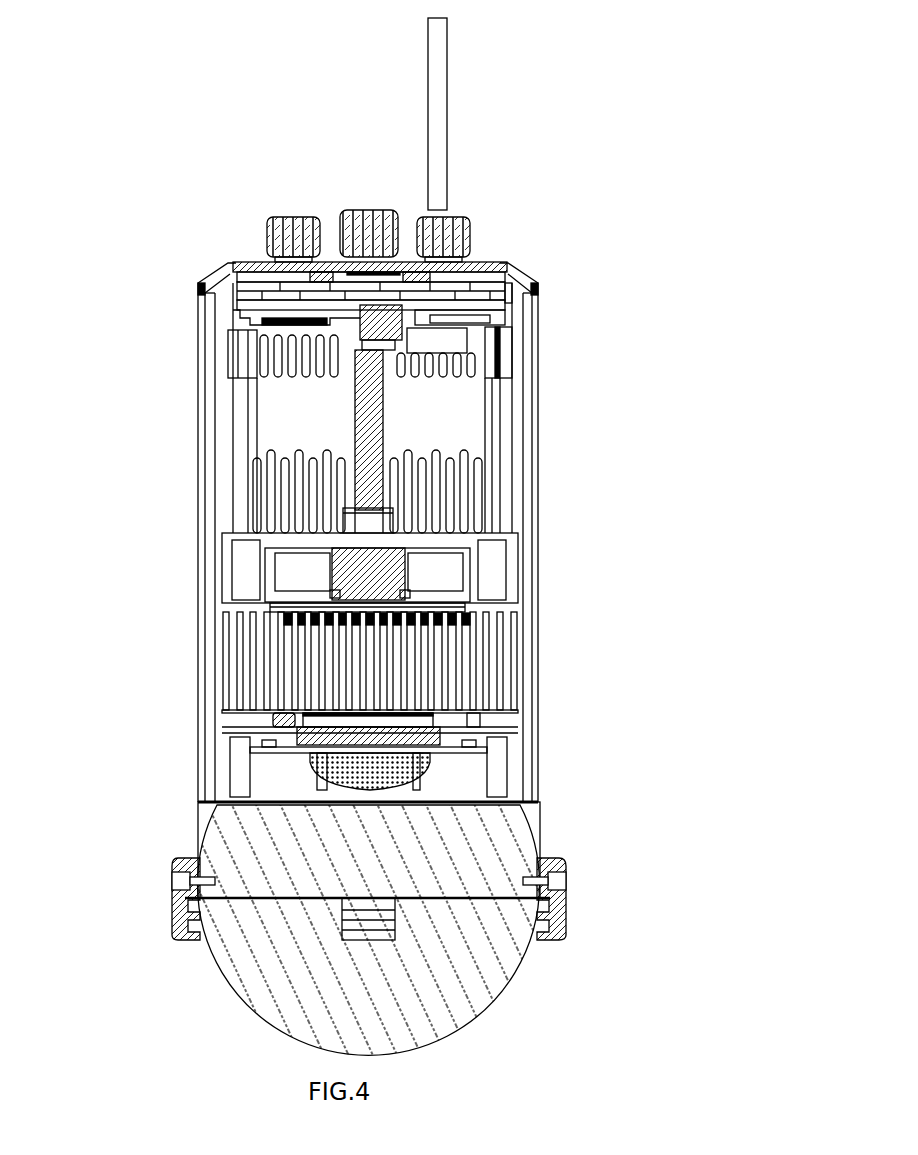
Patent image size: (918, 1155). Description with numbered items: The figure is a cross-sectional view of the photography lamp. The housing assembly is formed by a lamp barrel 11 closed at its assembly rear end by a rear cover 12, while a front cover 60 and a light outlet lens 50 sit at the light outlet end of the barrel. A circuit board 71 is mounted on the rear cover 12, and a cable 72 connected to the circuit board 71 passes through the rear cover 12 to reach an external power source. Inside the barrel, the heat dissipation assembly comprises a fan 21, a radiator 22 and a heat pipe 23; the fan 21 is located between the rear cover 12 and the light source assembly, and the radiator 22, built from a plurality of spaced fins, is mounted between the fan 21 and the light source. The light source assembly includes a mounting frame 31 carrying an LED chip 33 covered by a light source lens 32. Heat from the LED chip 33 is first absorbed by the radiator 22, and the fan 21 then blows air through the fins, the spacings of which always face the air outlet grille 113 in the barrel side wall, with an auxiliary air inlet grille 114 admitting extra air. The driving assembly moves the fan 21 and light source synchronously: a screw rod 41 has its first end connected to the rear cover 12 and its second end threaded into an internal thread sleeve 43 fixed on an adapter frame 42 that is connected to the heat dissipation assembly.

The lamp barrel 11 is at (202, 430).
The rear cover 12 is at (243, 263).
The fan 21 is at (232, 577).
The radiator 22 is at (272, 665).
The heat pipe 23 is at (285, 722).
The mounting frame 31 is at (480, 752).
The light source lens 32 is at (435, 775).
The LED chip 33 is at (488, 734).
The screw rod 41 is at (377, 413).
The adapter frame 42 is at (500, 575).
The internal thread sleeve 43 is at (390, 520).
The light outlet lens 50 is at (277, 857).
The front cover 60 is at (175, 862).
The circuit board 71 is at (505, 277).
The cable 72 is at (440, 128).
The air outlet grille 113 is at (272, 500).
The auxiliary air inlet grille 114 is at (272, 357).